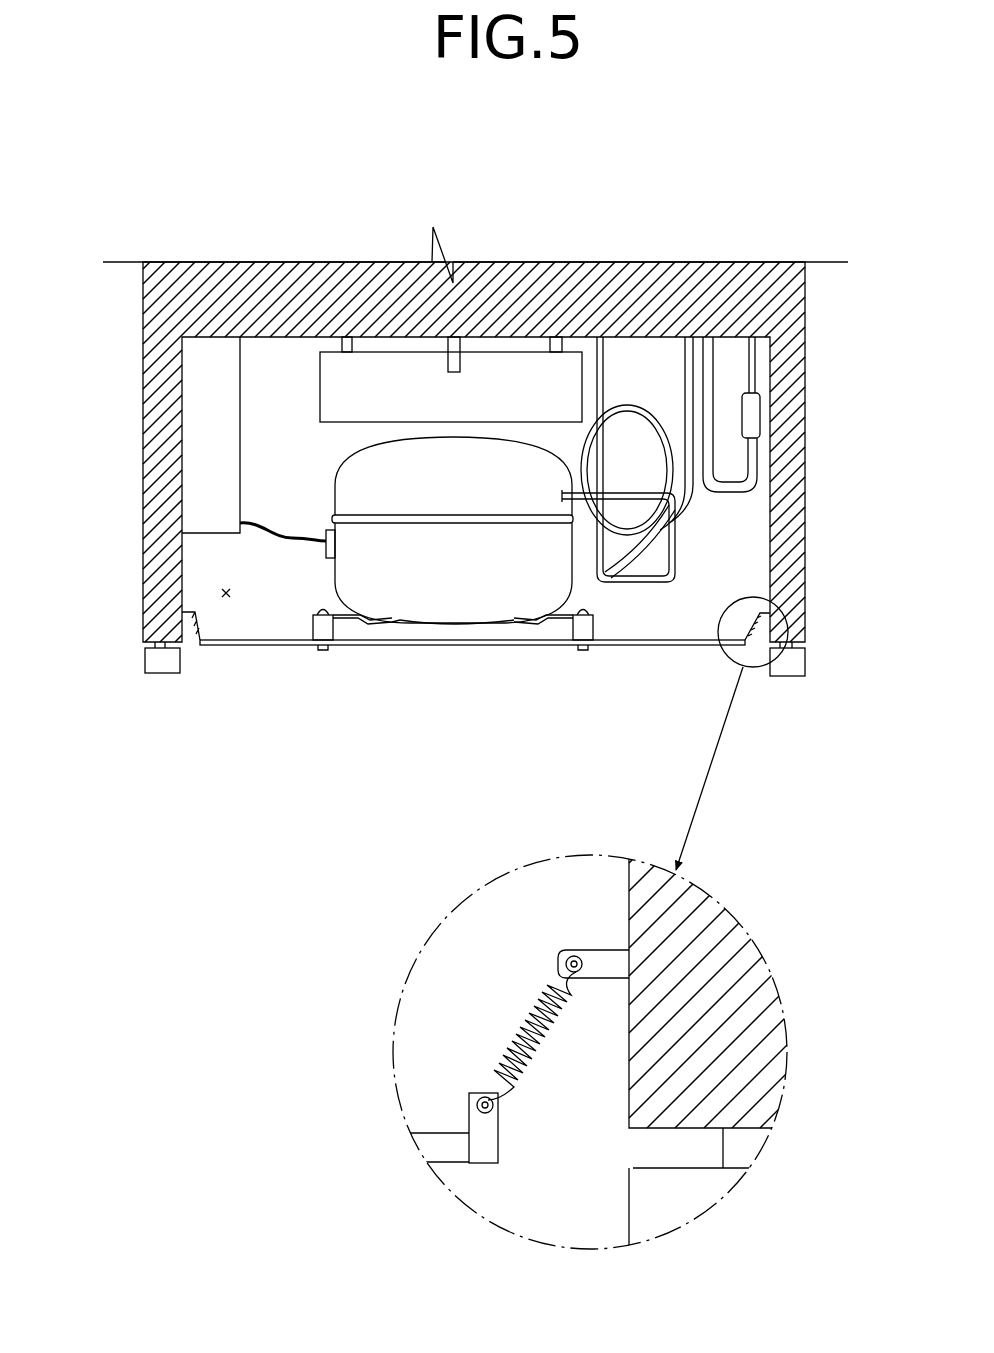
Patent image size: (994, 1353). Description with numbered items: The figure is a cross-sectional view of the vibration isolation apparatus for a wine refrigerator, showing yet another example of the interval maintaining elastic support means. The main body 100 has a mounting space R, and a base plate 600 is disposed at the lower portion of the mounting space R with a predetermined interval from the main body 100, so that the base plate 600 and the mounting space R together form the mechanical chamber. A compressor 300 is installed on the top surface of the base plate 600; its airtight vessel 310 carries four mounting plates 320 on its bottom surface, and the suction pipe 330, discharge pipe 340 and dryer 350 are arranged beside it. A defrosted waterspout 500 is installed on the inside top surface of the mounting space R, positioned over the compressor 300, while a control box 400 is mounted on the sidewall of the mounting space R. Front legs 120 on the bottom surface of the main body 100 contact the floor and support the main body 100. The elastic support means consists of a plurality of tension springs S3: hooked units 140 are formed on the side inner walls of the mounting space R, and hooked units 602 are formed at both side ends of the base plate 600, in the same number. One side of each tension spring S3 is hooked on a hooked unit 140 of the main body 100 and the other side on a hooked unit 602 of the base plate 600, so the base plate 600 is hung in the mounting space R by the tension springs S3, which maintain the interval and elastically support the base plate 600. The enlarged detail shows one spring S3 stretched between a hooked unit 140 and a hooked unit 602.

The main body 100 is at (812, 381).
The front legs 120 is at (146, 682).
The hooked units 140 is at (592, 957).
The compressor 300 is at (323, 497).
The airtight vessel 310 is at (427, 613).
The mounting plates 320 is at (360, 632).
The suction pipe 330 is at (687, 392).
The discharge pipe 340 is at (603, 395).
The dryer 350 is at (754, 431).
The control box 400 is at (247, 387).
The defrosted waterspout 500 is at (312, 392).
The base plate 600 is at (265, 650).
The hooked units 602 is at (470, 1110).
The mounting space R is at (224, 593).
The springs S3 is at (497, 1010).